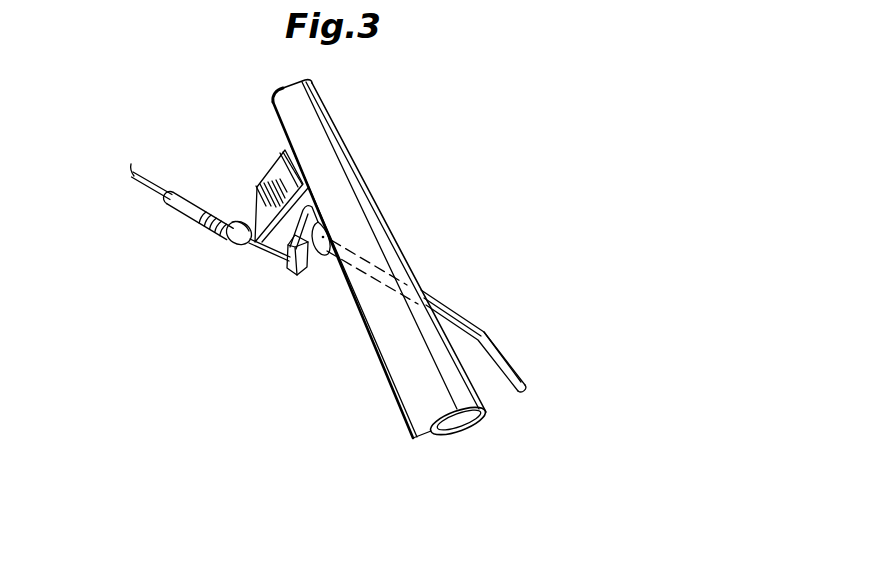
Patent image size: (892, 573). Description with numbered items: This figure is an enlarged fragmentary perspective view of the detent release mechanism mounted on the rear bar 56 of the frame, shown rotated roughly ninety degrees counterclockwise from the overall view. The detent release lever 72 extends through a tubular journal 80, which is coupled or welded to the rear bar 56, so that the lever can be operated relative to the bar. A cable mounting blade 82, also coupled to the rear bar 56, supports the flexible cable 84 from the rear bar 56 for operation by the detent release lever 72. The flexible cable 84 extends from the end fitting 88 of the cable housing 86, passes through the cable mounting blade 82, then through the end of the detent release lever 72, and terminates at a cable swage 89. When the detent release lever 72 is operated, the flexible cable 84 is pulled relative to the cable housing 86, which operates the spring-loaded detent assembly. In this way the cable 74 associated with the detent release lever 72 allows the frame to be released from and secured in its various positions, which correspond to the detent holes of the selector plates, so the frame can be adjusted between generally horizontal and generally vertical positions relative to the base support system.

The rear bar 56 is at (363, 193).
The detent release lever 72 is at (501, 354).
The cable 74 is at (157, 207).
The tubular journal 80 is at (320, 250).
The cable mounting blade 82 is at (258, 190).
The flexible cable 84 is at (148, 188).
The cable housing 86 is at (197, 222).
The end fitting 88 is at (229, 252).
The cable swage 89 is at (298, 280).